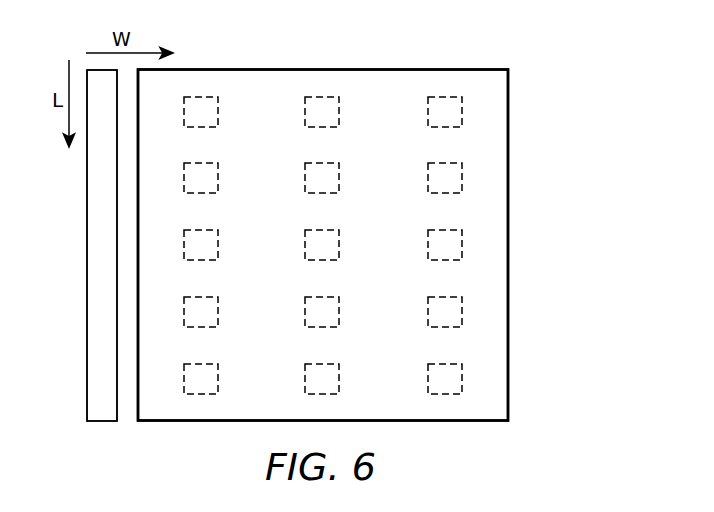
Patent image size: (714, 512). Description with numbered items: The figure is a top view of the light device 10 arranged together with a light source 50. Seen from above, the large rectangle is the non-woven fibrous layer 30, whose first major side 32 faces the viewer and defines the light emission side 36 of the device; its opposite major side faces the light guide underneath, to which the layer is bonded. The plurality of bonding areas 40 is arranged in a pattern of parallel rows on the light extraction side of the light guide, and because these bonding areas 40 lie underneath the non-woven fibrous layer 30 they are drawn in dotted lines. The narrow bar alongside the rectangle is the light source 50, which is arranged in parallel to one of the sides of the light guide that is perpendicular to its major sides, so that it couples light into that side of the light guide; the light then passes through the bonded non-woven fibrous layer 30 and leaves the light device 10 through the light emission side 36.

The light device 10 is at (557, 62).
The non-woven fibrous layer 30 is at (508, 239).
The first major side 32 is at (487, 379).
The light emission side 36 is at (153, 283).
The bonding areas 40 is at (462, 115).
The light source 50 is at (97, 223).